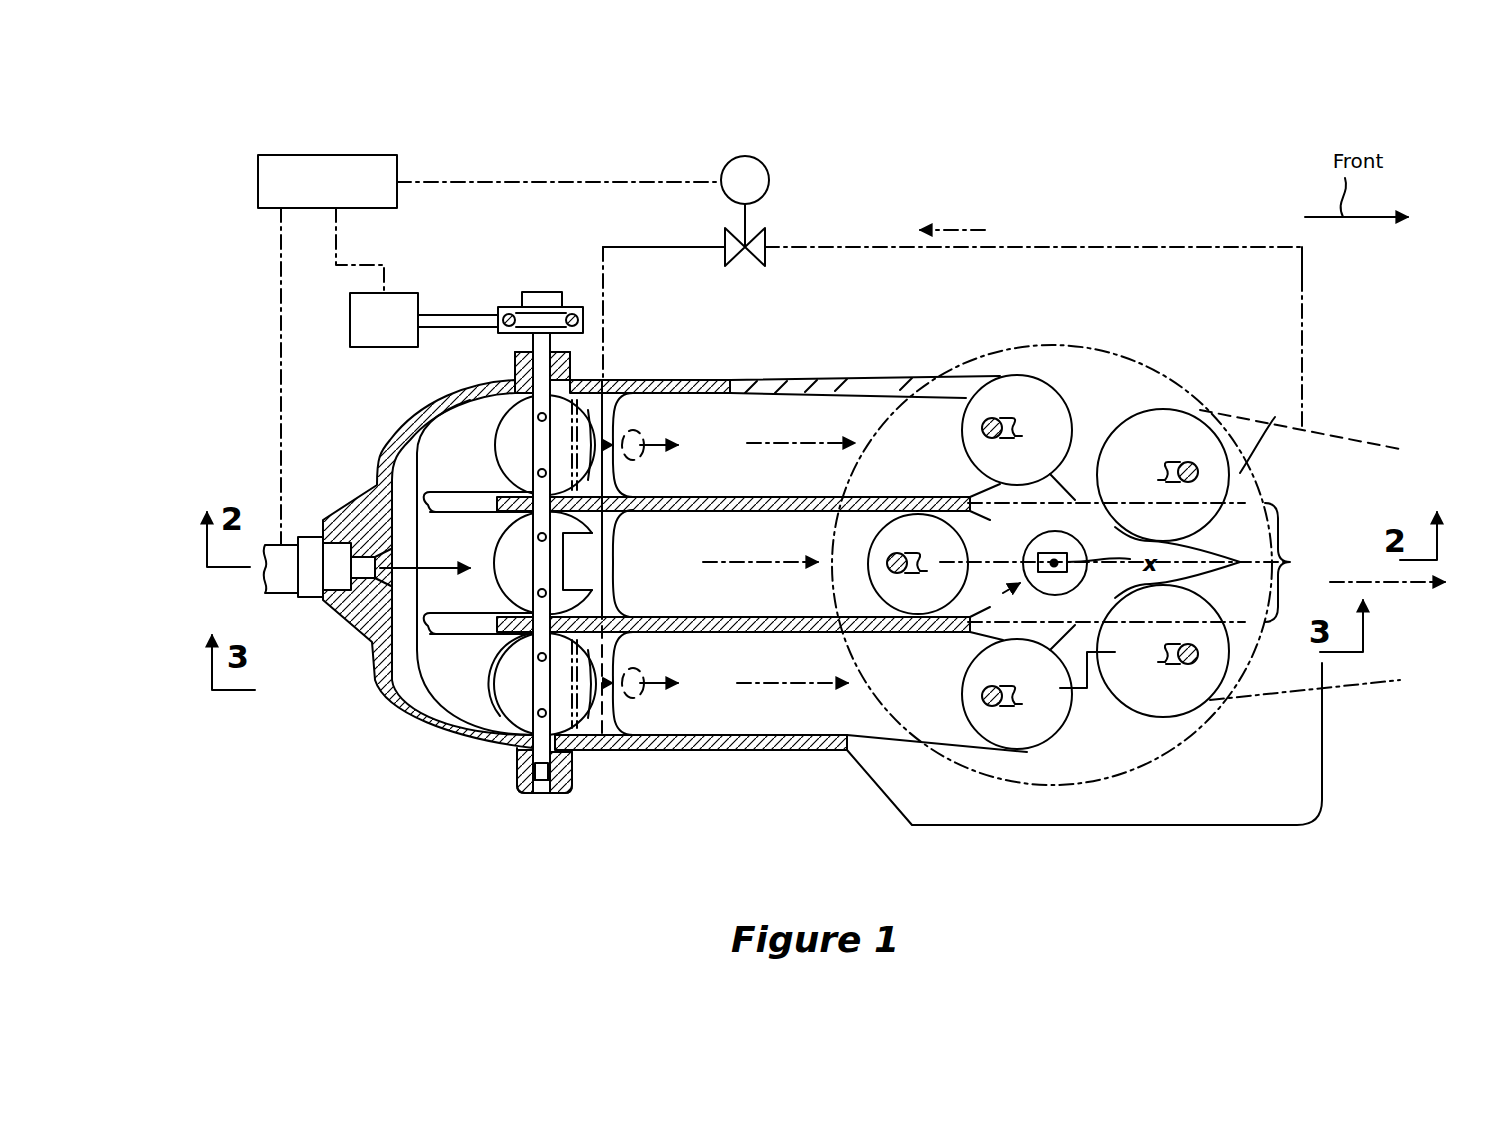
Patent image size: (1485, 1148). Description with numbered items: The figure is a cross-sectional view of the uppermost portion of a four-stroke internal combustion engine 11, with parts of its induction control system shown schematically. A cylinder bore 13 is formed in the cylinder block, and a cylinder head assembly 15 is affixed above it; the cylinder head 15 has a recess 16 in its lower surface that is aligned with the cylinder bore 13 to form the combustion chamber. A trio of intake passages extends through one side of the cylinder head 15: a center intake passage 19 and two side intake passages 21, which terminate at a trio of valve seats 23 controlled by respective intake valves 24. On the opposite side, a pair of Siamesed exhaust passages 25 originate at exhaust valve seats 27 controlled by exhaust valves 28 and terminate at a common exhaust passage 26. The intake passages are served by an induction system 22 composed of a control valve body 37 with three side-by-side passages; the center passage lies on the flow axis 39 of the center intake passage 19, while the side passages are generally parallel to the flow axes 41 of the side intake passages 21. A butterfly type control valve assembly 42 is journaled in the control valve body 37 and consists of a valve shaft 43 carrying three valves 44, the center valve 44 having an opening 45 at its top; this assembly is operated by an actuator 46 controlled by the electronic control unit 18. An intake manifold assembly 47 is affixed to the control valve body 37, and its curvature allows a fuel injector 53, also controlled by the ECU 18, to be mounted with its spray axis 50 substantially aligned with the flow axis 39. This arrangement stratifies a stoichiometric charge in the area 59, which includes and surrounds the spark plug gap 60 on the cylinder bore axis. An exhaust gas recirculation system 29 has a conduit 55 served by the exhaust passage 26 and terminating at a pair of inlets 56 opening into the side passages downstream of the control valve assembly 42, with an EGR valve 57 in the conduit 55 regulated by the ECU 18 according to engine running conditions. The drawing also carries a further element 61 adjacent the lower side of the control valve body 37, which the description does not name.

The engine 11 is at (1388, 284).
The cylinder bore 13 is at (1052, 579).
The cylinder head assembly 15 is at (1269, 869).
The recess 16 is at (1038, 819).
The electronic control unit (ECU) 18 is at (327, 155).
The center intake passage 19 is at (734, 465).
The side intake passages 21 is at (785, 559).
The induction system 22 is at (562, 813).
The valve seats 23 is at (971, 513).
The intake valves 24 is at (1001, 558).
The Siamesed exhaust passages 25 is at (1302, 570).
The common exhaust passage 26 is at (1305, 728).
The exhaust valve seats 27 is at (1179, 565).
The exhaust valves 28 is at (1106, 502).
The exhaust gas recirculation (EGR) system 29 is at (998, 197).
The control valve body 37 is at (503, 342).
The flow axis 39 is at (776, 649).
The flow axes 41 is at (938, 572).
The butterfly type control valve assembly 42 is at (507, 711).
The valve shaft 43 is at (531, 606).
The valves 44 is at (475, 579).
The opening 45 is at (775, 550).
The actuator 46 is at (424, 279).
The intake manifold assembly 47 is at (428, 564).
The spray axis 50 is at (478, 586).
The fuel injector 53 is at (367, 523).
The conduit 55 is at (1187, 211).
The inlets 56 is at (646, 567).
The EGR valve 57 is at (952, 293).
The stratification area 59 is at (1306, 562).
The spark plug gap 60 is at (1115, 602).
The air supply pipe 61 is at (618, 530).